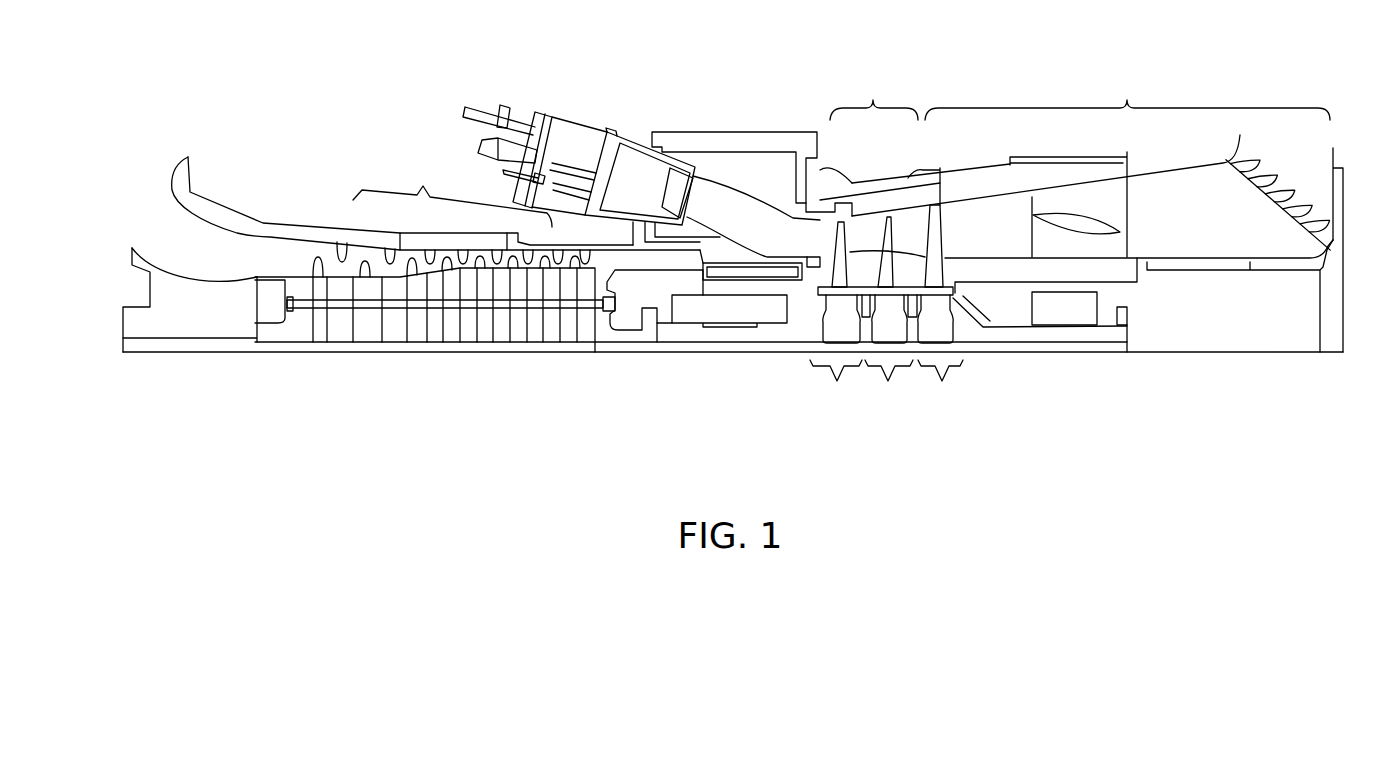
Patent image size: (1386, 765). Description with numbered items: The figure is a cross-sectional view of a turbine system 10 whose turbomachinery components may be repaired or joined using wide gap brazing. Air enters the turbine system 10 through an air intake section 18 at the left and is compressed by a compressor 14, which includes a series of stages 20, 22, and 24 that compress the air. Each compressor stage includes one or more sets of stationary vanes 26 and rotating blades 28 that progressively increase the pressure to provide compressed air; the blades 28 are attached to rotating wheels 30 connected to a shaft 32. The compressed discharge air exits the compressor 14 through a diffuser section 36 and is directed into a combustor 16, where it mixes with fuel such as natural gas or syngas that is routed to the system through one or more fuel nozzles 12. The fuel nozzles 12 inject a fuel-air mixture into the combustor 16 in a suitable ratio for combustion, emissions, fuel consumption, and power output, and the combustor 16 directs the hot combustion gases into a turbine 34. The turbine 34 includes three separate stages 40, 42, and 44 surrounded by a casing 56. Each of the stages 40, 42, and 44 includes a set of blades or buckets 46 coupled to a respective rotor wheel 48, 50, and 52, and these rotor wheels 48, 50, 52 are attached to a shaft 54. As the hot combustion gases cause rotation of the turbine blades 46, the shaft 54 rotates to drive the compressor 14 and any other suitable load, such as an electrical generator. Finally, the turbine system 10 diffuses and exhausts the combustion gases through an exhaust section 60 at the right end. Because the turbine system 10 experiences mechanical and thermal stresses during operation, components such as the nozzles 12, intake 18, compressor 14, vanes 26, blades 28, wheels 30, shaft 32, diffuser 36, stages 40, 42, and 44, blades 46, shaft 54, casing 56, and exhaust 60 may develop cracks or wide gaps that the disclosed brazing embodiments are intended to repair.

The turbine system 10 is at (745, 35).
The fuel nozzles 12 is at (575, 163).
The compressor 14 is at (691, 252).
The combustor 16 is at (438, 124).
The air intake section 18 is at (185, 253).
The stage 20 is at (446, 362).
The stage 22 is at (516, 362).
The stage 24 is at (574, 362).
The stationary vanes 26 is at (340, 242).
The blades 28 is at (313, 258).
The rotating wheels 30 is at (320, 327).
The shaft 32 is at (340, 303).
The turbine 34 is at (971, 195).
The diffuser section 36 is at (696, 258).
The stage 40 is at (836, 387).
The stage 42 is at (889, 387).
The stage 44 is at (940, 387).
The blades or buckets 46 is at (890, 228).
The rotor wheel 48 is at (836, 332).
The rotor wheel 50 is at (892, 332).
The rotor wheel 52 is at (940, 330).
The shaft 54 is at (762, 340).
The casing 56 is at (910, 217).
The exhaust section 60 is at (1098, 208).